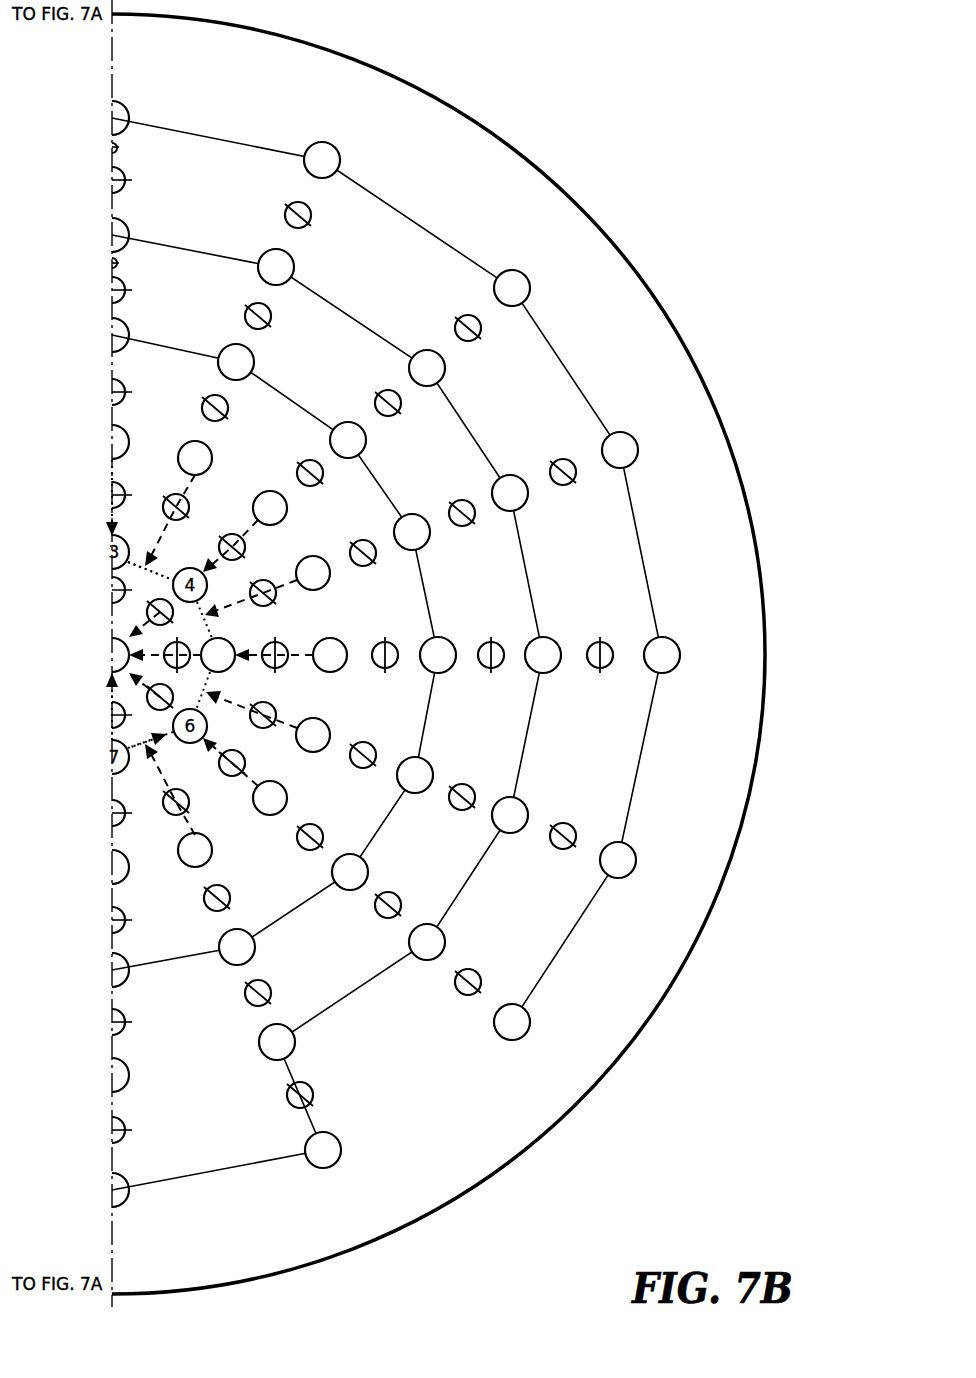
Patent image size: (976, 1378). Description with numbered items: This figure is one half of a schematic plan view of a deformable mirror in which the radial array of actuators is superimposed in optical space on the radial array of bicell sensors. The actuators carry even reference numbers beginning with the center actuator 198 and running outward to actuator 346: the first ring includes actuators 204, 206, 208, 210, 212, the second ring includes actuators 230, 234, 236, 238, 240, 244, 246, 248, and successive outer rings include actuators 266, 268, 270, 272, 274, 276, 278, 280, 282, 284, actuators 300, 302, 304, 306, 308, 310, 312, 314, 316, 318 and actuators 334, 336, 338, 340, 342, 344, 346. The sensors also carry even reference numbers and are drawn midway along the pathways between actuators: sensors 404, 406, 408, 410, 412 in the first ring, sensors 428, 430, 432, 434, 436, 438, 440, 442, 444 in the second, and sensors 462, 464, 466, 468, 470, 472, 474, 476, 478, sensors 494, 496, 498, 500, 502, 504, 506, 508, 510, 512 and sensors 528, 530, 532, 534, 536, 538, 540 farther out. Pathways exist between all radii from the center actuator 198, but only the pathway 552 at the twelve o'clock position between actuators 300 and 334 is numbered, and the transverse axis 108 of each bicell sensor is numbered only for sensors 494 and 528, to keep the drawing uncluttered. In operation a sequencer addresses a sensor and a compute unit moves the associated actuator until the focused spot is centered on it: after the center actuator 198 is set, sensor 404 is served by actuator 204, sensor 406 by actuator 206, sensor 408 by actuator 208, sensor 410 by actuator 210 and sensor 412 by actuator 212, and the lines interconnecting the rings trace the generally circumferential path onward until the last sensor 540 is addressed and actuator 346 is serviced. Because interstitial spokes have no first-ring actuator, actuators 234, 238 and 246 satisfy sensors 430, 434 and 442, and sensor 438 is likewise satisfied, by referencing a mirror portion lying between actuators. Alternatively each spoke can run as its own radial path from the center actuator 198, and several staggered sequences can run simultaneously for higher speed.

The transverse axis 108 is at (127, 190).
The center actuator 198 is at (112, 655).
The actuator 204 is at (161, 520).
The actuator 206 is at (219, 546).
The actuator 208 is at (220, 638).
The actuator 210 is at (251, 716).
The actuator 212 is at (161, 789).
The actuator 230 is at (121, 427).
The actuator 234 is at (210, 452).
The actuator 236 is at (271, 491).
The actuator 238 is at (321, 558).
The actuator 240 is at (334, 638).
The actuator 244 is at (288, 798).
The actuator 246 is at (213, 855).
The actuator 248 is at (123, 881).
The actuator 266 is at (126, 333).
The actuator 268 is at (254, 362).
The actuator 270 is at (348, 422).
The actuator 272 is at (412, 515).
The actuator 274 is at (438, 637).
The actuator 276 is at (428, 762).
The actuator 278 is at (368, 866).
The actuator 280 is at (255, 947).
The actuator 282 is at (130, 970).
The actuator 284 is at (128, 1081).
The actuator 300 is at (125, 226).
The actuator 302 is at (293, 262).
The actuator 304 is at (445, 369).
The actuator 306 is at (512, 475).
The actuator 308 is at (543, 637).
The actuator 310 is at (525, 805).
The actuator 312 is at (445, 940).
The actuator 314 is at (295, 1042).
The actuator 316 is at (330, 1168).
The actuator 318 is at (122, 1206).
The actuator 334 is at (122, 104).
The actuator 336 is at (334, 150).
The actuator 338 is at (530, 288).
The actuator 340 is at (638, 450).
The actuator 342 is at (680, 655).
The actuator 344 is at (636, 860).
The actuator 346 is at (530, 1022).
The sensor 404 is at (126, 565).
The sensor 406 is at (251, 595).
The sensor 408 is at (190, 665).
The sensor 410 is at (166, 710).
The sensor 412 is at (122, 742).
The sensor 428 is at (118, 483).
The sensor 430 is at (189, 500).
The sensor 432 is at (245, 547).
The sensor 434 is at (276, 597).
The sensor 436 is at (287, 665).
The sensor 438 is at (276, 712).
The sensor 440 is at (247, 766).
The sensor 442 is at (190, 812).
The sensor 444 is at (121, 824).
The sensor 462 is at (122, 384).
The sensor 464 is at (228, 408).
The sensor 466 is at (310, 460).
The sensor 468 is at (363, 540).
The sensor 470 is at (385, 637).
The sensor 472 is at (372, 745).
The sensor 474 is at (323, 832).
The sensor 476 is at (122, 926).
The sensor 478 is at (125, 1019).
The bicell sensor 494 is at (130, 290).
The sensor 496 is at (271, 318).
The sensor 498 is at (388, 390).
The sensor 500 is at (119, 263).
The sensor 502 is at (491, 641).
The sensor 504 is at (472, 788).
The sensor 506 is at (400, 900).
The sensor 508 is at (270, 990).
The sensor 510 is at (314, 1094).
The sensor 512 is at (126, 1127).
The bicell sensor 528 is at (128, 178).
The sensor 530 is at (312, 215).
The sensor 532 is at (482, 333).
The sensor 534 is at (565, 458).
The sensor 536 is at (600, 642).
The sensor 538 is at (572, 826).
The sensor 540 is at (482, 982).
The pathway 552 is at (119, 147).